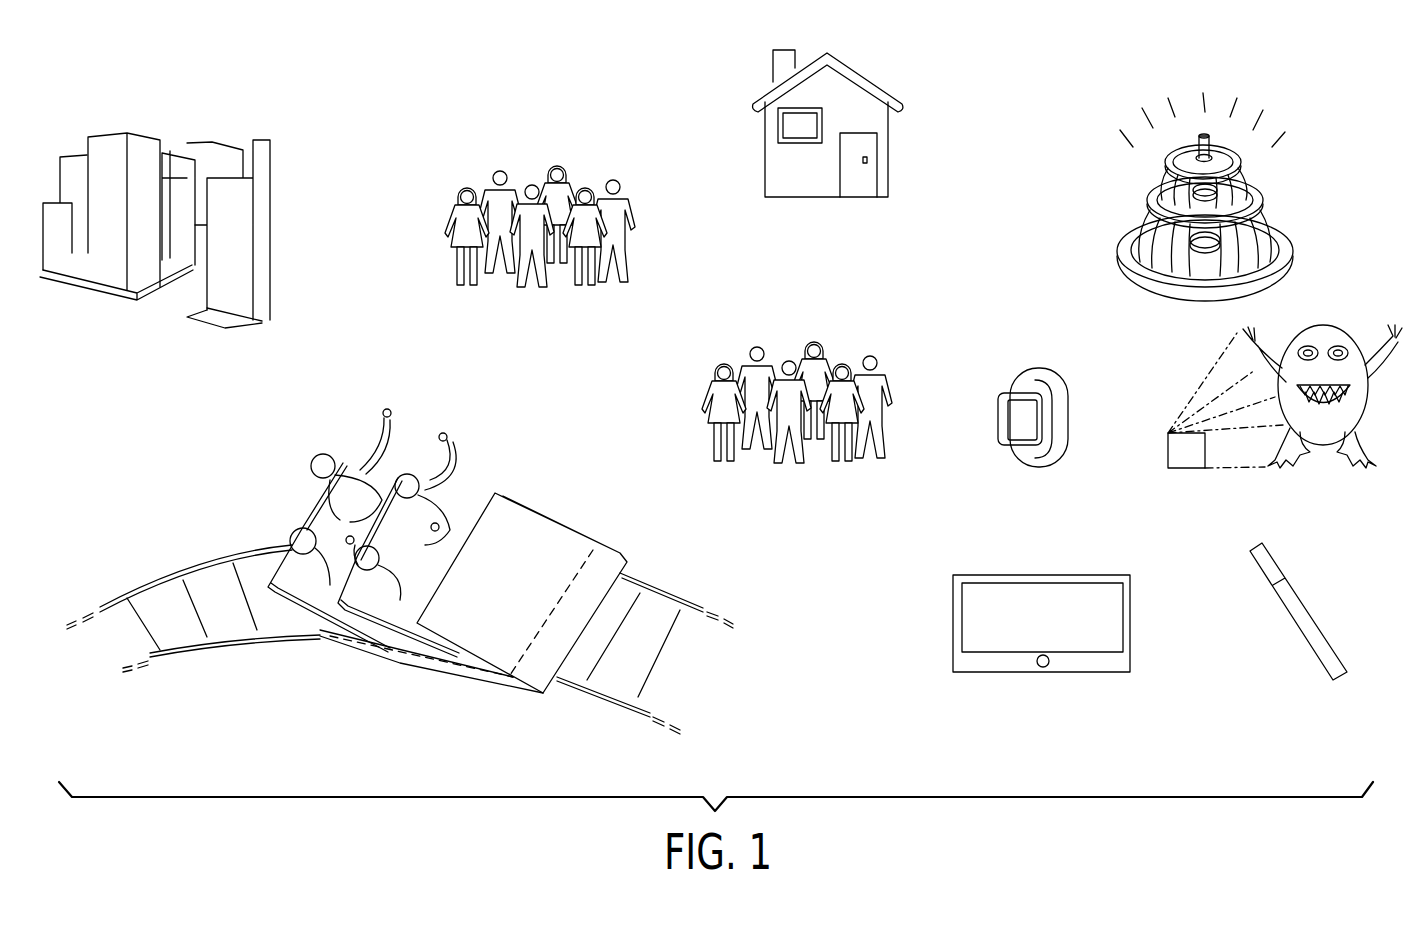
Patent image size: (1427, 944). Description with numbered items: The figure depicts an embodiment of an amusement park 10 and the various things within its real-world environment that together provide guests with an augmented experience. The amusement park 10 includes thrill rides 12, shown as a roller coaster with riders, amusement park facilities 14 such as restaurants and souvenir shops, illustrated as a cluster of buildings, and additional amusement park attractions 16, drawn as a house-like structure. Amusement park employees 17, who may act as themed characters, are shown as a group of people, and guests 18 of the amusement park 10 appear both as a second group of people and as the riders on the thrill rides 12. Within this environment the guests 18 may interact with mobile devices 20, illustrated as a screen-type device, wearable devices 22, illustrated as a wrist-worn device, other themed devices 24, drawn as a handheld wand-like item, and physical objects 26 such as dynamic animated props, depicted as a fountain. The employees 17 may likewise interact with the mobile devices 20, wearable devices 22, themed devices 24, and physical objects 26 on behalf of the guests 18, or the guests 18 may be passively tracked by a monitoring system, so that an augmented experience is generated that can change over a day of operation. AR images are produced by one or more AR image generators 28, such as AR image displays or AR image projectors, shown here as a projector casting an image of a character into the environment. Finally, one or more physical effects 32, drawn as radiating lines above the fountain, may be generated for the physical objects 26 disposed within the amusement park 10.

The amusement park 10 is at (1185, 56).
The thrill rides 12 is at (206, 466).
The amusement park facilities 14 is at (108, 146).
The additional amusement park attractions 16 is at (745, 48).
The amusement park employees 17 is at (425, 190).
The guests 18 is at (685, 366).
The mobile devices 20 is at (928, 578).
The wearable devices 22 is at (1068, 372).
The themed devices 24 is at (1237, 530).
The physical objects 26 is at (1103, 158).
The AR image generators 28 is at (1168, 452).
The physical effects 32 is at (1248, 106).